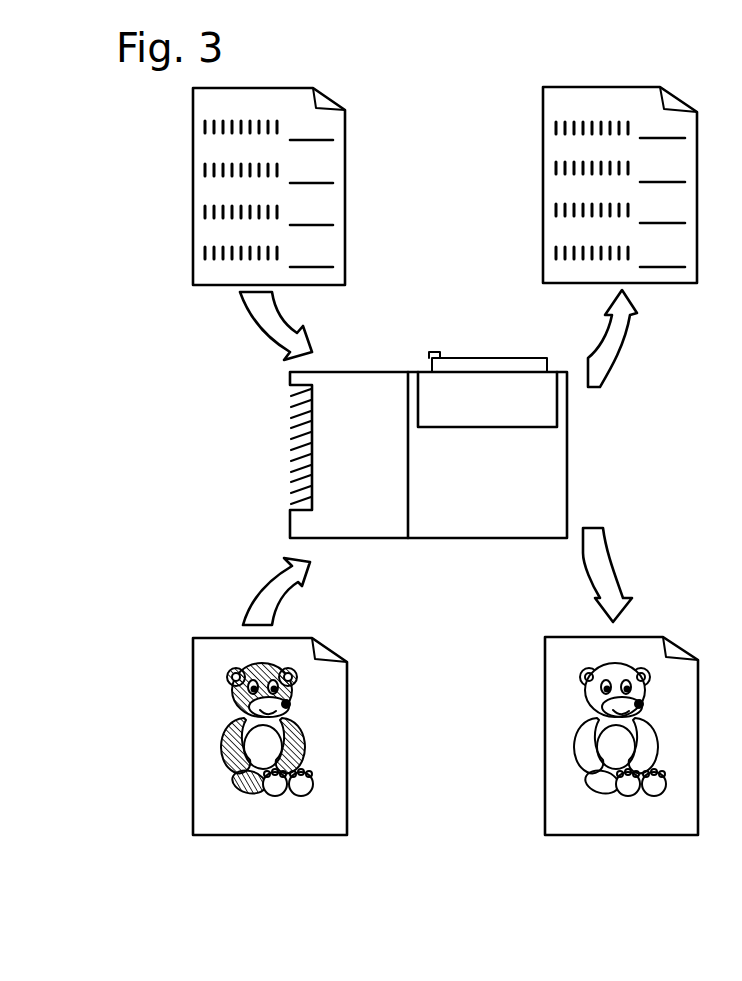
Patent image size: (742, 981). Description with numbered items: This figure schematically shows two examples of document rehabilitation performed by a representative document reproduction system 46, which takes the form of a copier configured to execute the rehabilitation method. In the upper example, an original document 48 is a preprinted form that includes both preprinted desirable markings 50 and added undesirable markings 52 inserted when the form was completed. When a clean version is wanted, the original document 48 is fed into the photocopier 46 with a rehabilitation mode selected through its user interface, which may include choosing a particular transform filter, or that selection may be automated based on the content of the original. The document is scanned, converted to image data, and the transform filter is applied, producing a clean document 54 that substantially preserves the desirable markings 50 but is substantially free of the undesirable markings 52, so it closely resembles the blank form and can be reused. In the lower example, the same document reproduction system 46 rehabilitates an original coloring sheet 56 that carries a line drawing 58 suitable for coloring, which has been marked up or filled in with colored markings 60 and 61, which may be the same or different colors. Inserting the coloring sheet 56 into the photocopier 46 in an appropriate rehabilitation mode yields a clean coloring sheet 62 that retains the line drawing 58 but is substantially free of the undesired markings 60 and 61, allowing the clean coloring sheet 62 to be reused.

The document reproduction system 46 is at (497, 358).
The original document 48 is at (300, 88).
The preprinted desirable markings 50 is at (203, 212).
The added undesirable markings 52 is at (336, 247).
The clean document 54 is at (651, 87).
The coloring sheet 56 is at (300, 638).
The line drawing 58 is at (405, 696).
The colored markings 60 is at (248, 656).
The colored markings 61 is at (309, 749).
The clean coloring sheet 62 is at (650, 637).